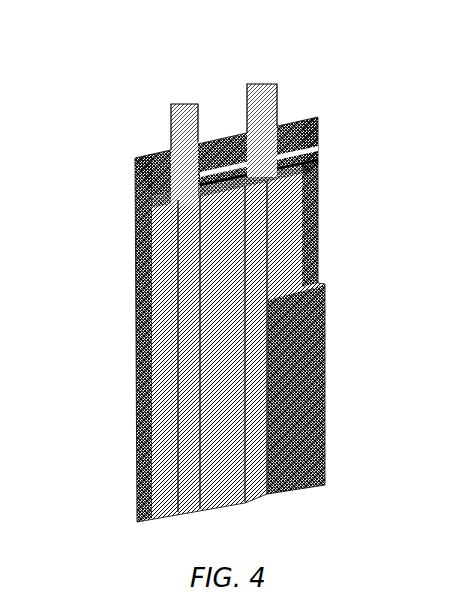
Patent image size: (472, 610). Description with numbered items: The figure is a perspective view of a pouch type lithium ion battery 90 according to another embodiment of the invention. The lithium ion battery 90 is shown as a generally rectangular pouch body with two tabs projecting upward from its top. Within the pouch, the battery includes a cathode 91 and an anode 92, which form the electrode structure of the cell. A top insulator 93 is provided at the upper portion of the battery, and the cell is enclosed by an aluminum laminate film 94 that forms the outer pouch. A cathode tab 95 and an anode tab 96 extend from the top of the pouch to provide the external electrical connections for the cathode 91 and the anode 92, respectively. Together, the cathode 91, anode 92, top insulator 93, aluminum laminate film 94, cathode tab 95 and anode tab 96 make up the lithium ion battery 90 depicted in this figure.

The lithium ion battery 90 is at (430, 39).
The cathode 91 is at (293, 248).
The anode 92 is at (243, 408).
The top insulator 93 is at (150, 190).
The aluminum laminate film 94 is at (323, 410).
The cathode tab 95 is at (182, 122).
The anode tab 96 is at (260, 103).